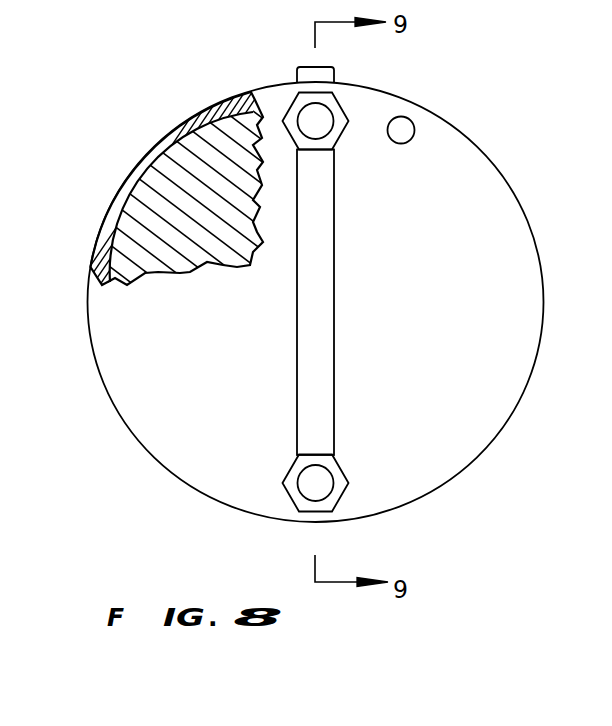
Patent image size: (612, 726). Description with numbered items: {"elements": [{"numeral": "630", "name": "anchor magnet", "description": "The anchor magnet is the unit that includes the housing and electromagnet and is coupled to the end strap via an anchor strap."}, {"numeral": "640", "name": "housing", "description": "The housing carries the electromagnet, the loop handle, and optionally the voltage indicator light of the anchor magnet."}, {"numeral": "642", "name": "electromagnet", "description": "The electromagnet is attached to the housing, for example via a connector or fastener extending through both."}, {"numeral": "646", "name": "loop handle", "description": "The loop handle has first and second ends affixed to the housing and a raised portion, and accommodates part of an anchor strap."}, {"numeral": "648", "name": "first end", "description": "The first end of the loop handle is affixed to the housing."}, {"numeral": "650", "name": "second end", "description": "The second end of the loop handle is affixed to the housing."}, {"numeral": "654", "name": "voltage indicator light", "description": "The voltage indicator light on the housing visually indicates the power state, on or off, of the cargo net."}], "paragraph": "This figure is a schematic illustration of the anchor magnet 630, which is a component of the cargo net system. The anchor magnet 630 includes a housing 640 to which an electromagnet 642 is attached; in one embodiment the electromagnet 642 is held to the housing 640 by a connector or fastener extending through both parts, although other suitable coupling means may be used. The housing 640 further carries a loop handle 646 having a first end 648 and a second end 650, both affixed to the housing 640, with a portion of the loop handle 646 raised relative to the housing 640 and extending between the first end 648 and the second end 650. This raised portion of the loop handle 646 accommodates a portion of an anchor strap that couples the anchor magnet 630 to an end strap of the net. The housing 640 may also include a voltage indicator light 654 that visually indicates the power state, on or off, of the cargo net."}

The sample holder assembly 630 is at (313, 261).
The circular plate 640 is at (473, 197).
The sectioned hatched portion 642 is at (200, 245).
The bar 646 is at (317, 317).
The upper hex nut 648 is at (296, 108).
The lower hex nut 650 is at (340, 473).
The hole 654 is at (406, 128).